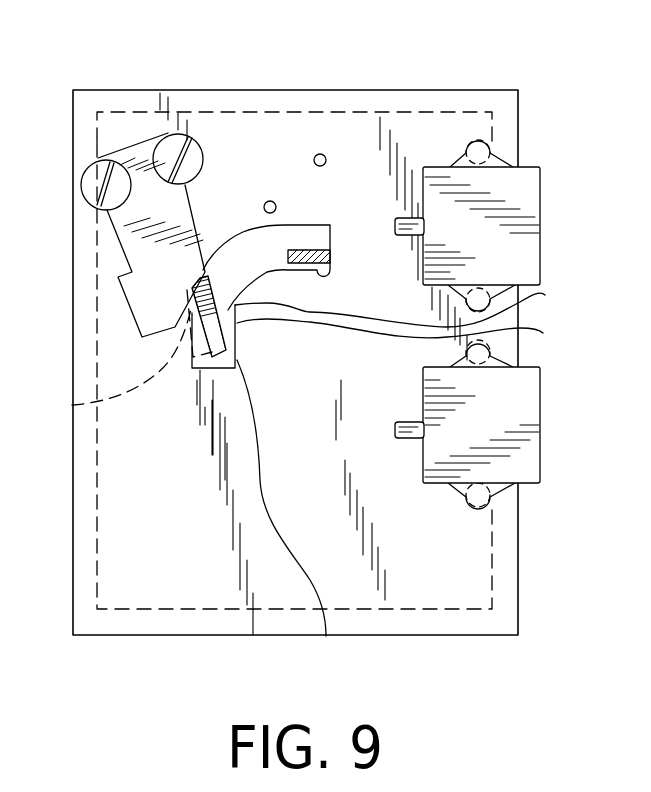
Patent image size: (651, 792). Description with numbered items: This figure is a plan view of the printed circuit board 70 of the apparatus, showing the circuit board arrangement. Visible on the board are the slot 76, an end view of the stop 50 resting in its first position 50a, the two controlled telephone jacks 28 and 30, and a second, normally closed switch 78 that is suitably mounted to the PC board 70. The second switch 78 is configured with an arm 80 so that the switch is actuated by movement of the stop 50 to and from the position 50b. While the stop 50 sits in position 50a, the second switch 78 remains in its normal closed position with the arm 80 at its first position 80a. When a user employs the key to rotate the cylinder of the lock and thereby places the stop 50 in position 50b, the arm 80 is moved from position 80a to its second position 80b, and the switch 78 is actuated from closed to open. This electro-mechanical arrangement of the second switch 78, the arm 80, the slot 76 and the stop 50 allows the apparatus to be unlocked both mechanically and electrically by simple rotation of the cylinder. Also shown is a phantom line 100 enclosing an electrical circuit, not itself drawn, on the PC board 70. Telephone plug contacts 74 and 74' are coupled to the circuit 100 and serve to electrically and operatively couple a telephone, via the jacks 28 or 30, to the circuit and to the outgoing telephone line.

The controlled telephone jack 28 is at (540, 417).
The controlled telephone jack 30 is at (540, 225).
The stop 50 is at (330, 276).
The stop position 50a is at (313, 250).
The stop position 50b is at (290, 516).
The printed circuit board 70 is at (483, 636).
The telephone plug contact 74 is at (317, 98).
The telephone plug contact 74' is at (259, 129).
The slot 76 is at (243, 232).
The second switch 78 is at (140, 139).
The arm 80 is at (396, 310).
The first arm position 80a is at (399, 341).
The second arm position 80b is at (72, 405).
The phantom line enclosing electrical circuit 100 is at (493, 578).